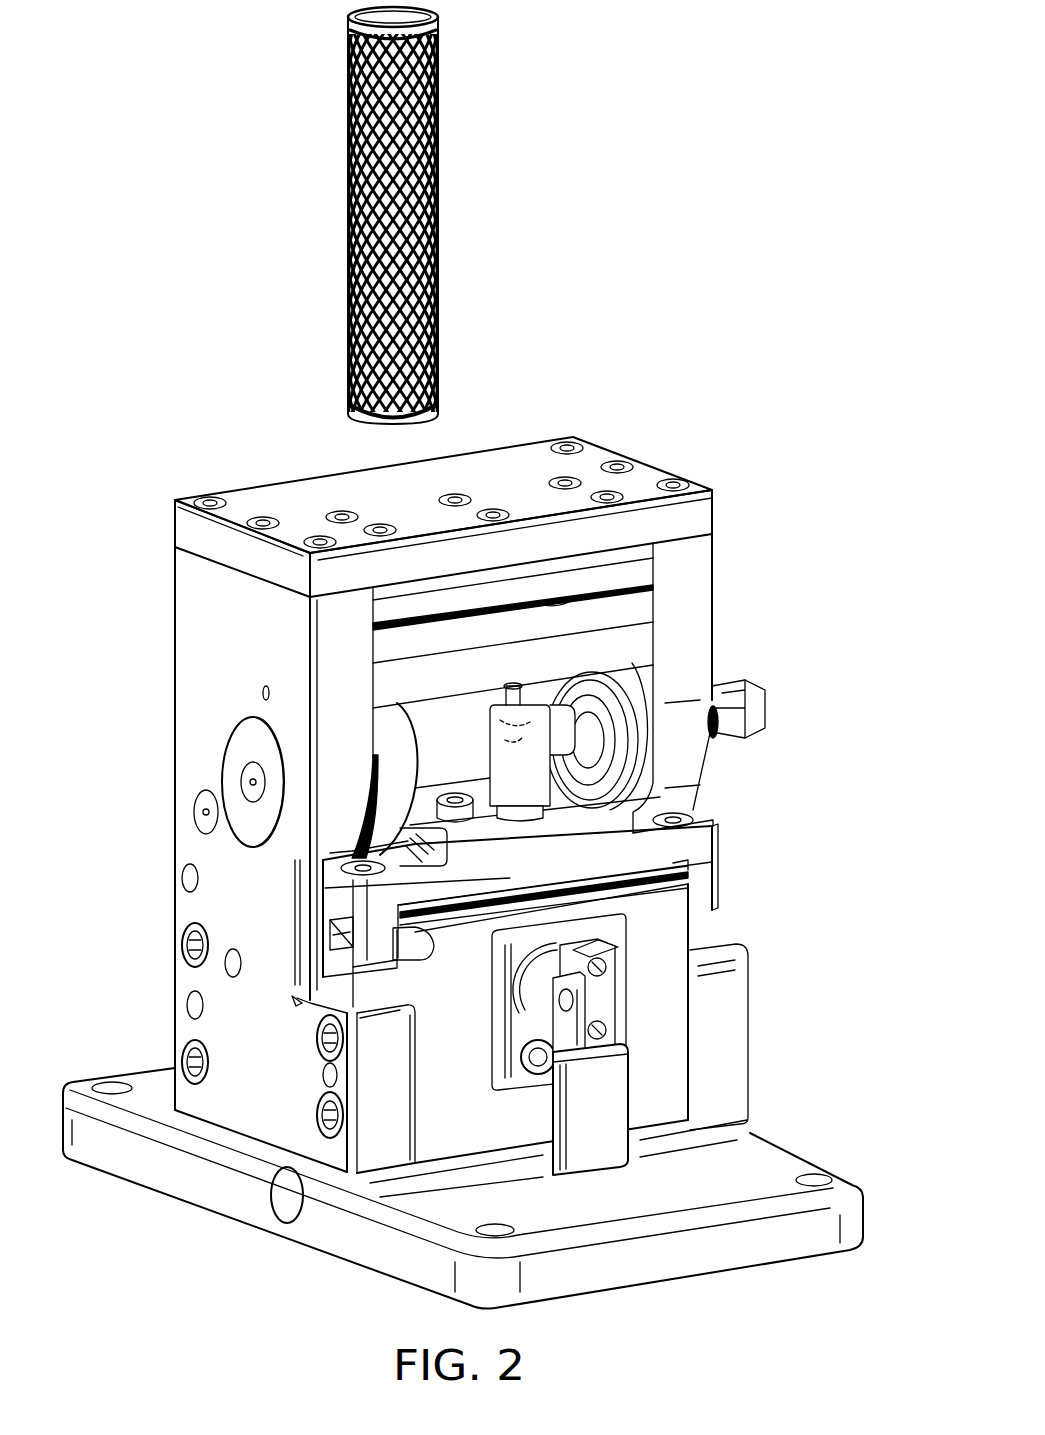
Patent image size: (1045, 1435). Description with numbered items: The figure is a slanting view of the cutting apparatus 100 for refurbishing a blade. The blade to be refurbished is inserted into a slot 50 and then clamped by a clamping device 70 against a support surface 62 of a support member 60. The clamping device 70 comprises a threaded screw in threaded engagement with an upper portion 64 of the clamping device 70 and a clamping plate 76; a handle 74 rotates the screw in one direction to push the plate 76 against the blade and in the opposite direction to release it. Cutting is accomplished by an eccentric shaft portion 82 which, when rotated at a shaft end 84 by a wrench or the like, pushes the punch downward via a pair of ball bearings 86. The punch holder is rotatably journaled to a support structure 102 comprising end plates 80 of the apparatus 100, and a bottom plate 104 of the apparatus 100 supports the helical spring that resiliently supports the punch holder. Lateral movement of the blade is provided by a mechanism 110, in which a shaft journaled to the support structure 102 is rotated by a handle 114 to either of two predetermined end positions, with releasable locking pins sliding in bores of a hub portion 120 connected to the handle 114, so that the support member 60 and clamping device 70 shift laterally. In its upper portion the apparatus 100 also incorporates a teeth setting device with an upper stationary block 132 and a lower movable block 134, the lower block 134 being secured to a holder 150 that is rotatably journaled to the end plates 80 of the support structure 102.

The apparatus 100 is at (776, 445).
The holder 150 is at (568, 598).
The upper stationary block 132 is at (632, 570).
The end plates 80 is at (640, 636).
The lower movable block 134 is at (632, 607).
The eccentric shaft portion 82 is at (432, 735).
The shaft end 84 is at (748, 735).
The handle 74 is at (555, 777).
The upper portion 64 is at (717, 833).
The ball bearings 86 is at (620, 783).
The clamping plate 76 is at (717, 862).
The clamping device 70 is at (808, 868).
The slot 50 is at (432, 956).
The support surface 62 is at (336, 913).
The support member 60 is at (717, 937).
The support structure 102 is at (152, 978).
The hub portion 120 is at (540, 1007).
The mechanism 110 is at (646, 1011).
The handle 114 is at (615, 1085).
The bottom plate 104 is at (225, 1185).